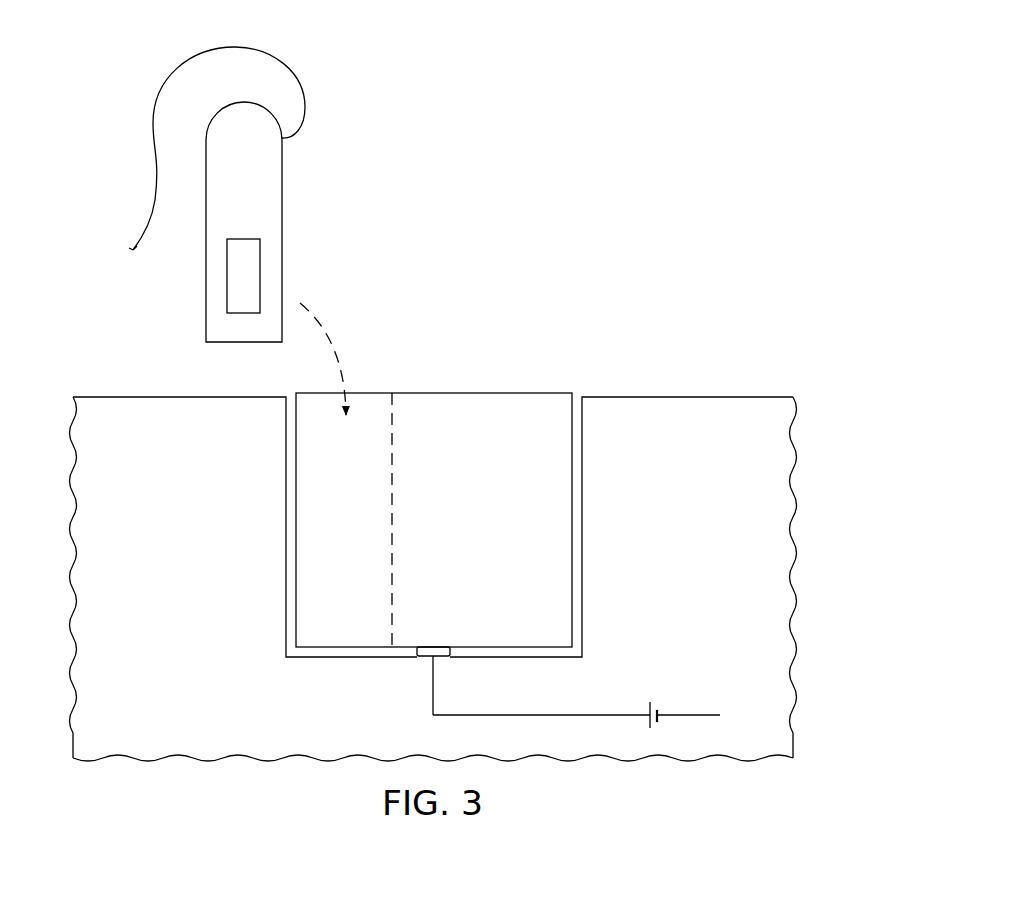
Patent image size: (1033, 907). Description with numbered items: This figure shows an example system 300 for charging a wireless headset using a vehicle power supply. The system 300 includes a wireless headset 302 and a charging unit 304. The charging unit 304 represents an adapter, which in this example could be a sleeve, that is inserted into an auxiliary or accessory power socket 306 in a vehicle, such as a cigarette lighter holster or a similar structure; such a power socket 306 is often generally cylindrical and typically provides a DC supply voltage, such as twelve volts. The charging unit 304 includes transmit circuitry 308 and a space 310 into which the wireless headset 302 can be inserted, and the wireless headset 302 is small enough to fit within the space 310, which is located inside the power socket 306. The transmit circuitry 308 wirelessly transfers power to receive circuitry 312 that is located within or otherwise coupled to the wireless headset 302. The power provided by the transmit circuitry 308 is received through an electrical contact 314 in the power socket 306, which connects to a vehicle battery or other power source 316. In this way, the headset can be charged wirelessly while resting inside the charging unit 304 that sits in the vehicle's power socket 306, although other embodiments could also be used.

The system 300 is at (643, 110).
The wireless headset 302 is at (283, 218).
The charging unit 304 is at (465, 389).
The power socket 306 is at (586, 526).
The transmit circuitry 308 is at (543, 439).
The space 310 is at (363, 624).
The receive circuitry 312 is at (226, 277).
The electrical contact 314 is at (441, 650).
The power source 316 is at (650, 700).